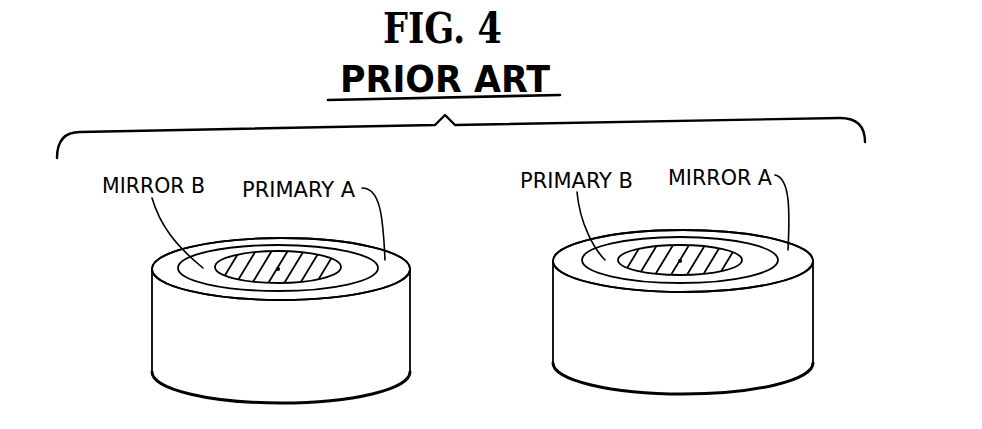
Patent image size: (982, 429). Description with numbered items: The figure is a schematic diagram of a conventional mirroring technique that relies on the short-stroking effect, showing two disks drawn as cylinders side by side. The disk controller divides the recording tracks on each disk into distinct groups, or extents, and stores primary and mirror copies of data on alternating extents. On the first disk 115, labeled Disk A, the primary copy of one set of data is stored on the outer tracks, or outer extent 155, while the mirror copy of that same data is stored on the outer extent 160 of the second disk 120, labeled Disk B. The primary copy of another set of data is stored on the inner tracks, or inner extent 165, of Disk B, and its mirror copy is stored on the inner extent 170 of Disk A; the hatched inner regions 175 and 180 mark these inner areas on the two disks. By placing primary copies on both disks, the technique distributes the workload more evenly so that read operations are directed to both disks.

The disk 115 is at (152, 313).
The disk 120 is at (552, 305).
The outer extent 155 is at (386, 260).
The outer extent 160 is at (797, 258).
The inner extent 170 is at (260, 255).
The primary A region on disk A 175 is at (292, 258).
The inner extent 165 is at (664, 246).
The mirror A region on disk B 180 is at (695, 246).